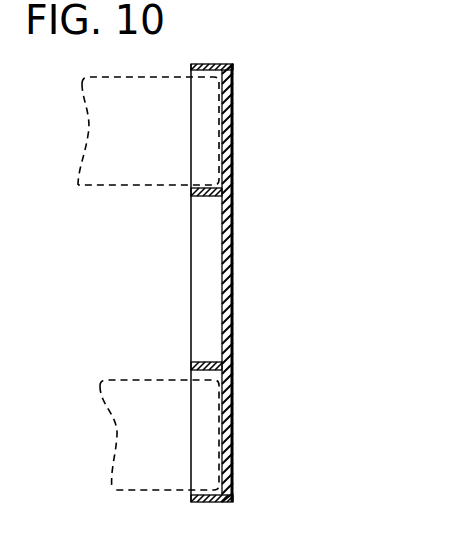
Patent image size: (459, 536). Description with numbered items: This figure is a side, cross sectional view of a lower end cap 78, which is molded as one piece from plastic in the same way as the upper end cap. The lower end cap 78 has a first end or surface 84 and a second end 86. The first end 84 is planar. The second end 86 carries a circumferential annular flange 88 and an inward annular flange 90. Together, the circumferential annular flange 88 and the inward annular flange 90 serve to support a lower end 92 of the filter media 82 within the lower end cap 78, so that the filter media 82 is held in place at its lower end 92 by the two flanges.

The lower end cap 78 is at (304, 60).
The filter media 82 is at (112, 158).
The first end 84 is at (233, 229).
The second end 86 is at (222, 275).
The circumferential annular flange 88 is at (207, 63).
The inward annular flange 90 is at (191, 197).
The lower end 92 is at (205, 410).